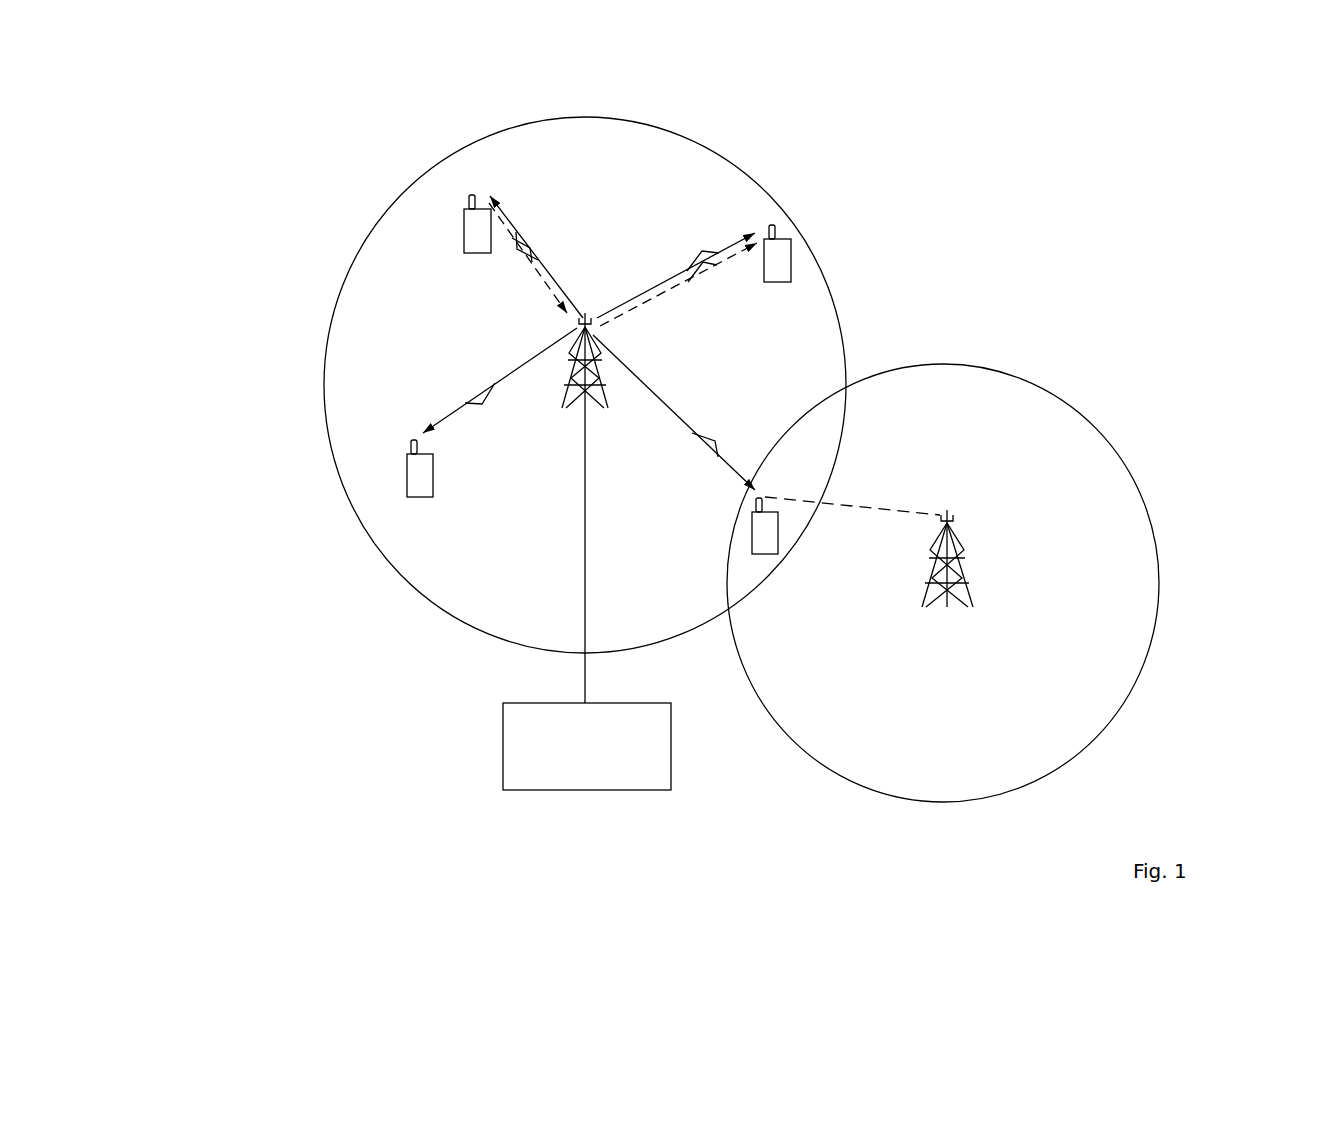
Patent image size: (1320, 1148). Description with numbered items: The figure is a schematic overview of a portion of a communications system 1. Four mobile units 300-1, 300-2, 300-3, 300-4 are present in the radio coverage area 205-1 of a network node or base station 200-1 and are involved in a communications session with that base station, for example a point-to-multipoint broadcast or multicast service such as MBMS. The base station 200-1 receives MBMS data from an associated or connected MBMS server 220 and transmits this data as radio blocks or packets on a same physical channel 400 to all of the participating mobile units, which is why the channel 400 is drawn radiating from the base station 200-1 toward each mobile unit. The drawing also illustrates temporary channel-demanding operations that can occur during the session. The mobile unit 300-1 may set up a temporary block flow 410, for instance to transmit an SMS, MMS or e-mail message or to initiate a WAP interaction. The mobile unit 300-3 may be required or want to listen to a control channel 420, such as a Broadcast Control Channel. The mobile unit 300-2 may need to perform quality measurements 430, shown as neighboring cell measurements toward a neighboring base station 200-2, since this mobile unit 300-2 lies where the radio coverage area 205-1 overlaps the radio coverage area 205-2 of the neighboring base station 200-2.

The communications system 1 is at (266, 778).
The radio coverage area 205-1 is at (324, 387).
The radio coverage area 205-2 is at (1159, 580).
The base station 200-1 is at (569, 394).
The neighboring base station 200-2 is at (954, 524).
The MBMS server 220 is at (503, 745).
The mobile unit 300-1 is at (464, 229).
The mobile unit 300-2 is at (778, 536).
The mobile unit 300-3 is at (791, 256).
The mobile unit 300-4 is at (407, 475).
The channel 400 is at (530, 244).
The temporary block flow 410 is at (528, 258).
The control channel 420 is at (703, 276).
The quality measurements 430 is at (862, 506).